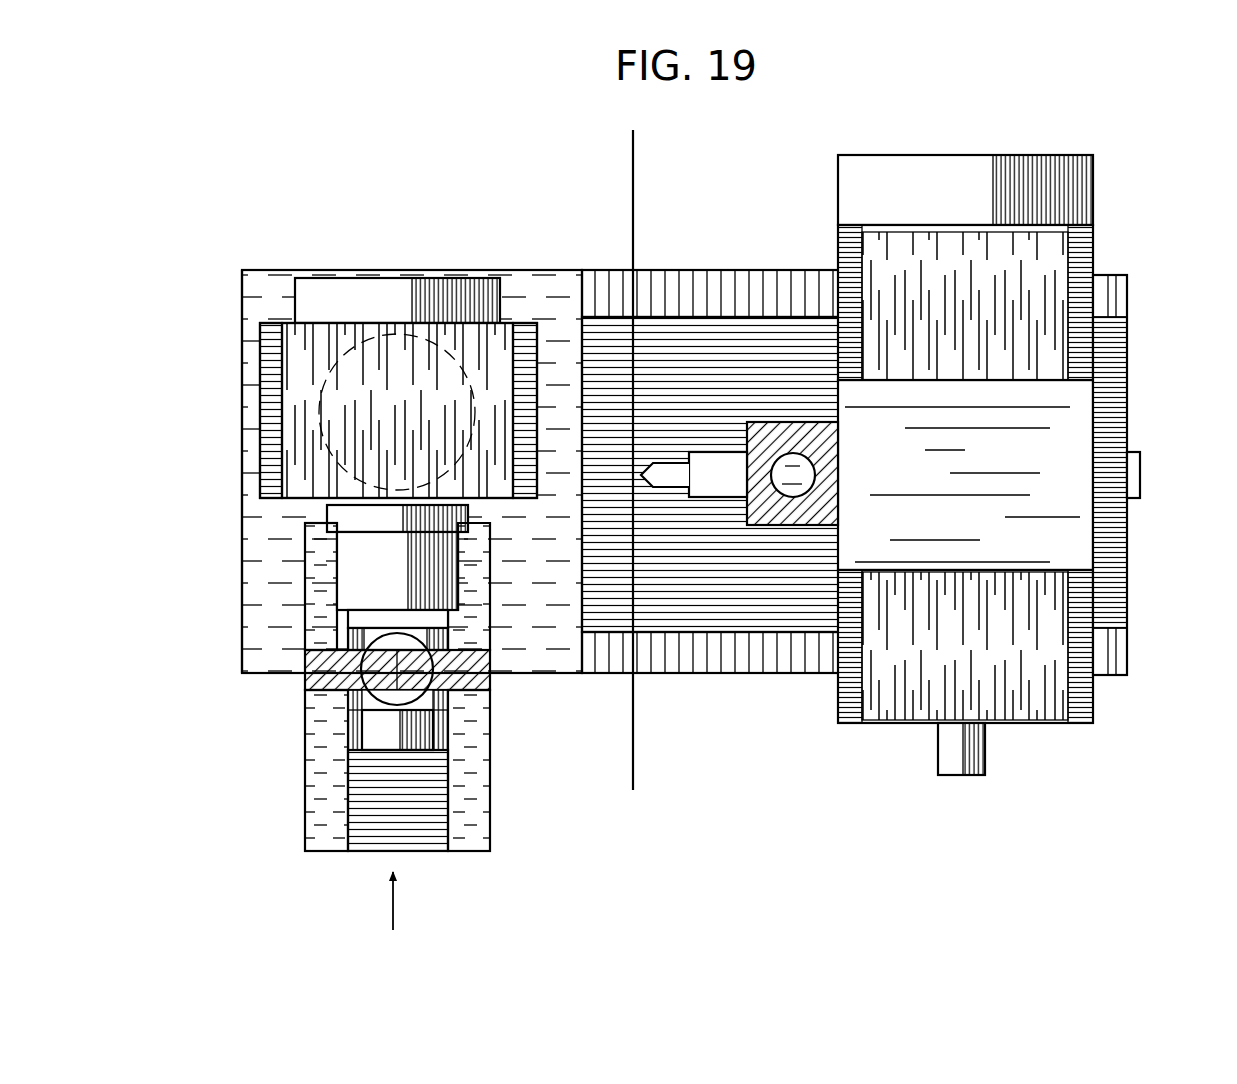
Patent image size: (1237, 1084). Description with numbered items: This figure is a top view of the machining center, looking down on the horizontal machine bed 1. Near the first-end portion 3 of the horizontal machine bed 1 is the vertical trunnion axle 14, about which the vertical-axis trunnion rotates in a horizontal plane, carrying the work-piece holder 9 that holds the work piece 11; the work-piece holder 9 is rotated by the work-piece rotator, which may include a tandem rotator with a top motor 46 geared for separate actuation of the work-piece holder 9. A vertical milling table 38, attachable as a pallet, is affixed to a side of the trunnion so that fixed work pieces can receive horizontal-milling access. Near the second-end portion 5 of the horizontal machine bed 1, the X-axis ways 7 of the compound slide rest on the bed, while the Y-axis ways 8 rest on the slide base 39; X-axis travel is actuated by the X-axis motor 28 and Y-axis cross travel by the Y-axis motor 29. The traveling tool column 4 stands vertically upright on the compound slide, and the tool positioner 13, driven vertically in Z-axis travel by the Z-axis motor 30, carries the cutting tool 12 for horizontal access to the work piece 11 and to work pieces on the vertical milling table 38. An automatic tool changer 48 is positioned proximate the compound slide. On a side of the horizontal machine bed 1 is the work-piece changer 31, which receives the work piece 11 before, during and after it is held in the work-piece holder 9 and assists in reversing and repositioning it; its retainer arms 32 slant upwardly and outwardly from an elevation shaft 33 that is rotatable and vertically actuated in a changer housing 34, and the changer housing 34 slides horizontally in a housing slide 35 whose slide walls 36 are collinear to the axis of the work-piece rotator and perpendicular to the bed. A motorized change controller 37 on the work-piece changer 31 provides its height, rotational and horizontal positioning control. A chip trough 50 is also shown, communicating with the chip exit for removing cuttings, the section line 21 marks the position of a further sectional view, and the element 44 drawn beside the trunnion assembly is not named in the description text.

The horizontal machine bed 1 is at (530, 640).
The first-end portion 3 is at (240, 452).
The traveling tool column 4 is at (810, 437).
The second-end portion 5 is at (1130, 548).
The X-axis ways 7 is at (760, 292).
The Y-axis ways 8 is at (850, 262).
The work-piece holder 9 is at (375, 518).
The work piece 11 is at (375, 572).
The cutting tool 12 is at (700, 498).
The tool positioner 13 is at (718, 474).
The vertical trunnion axle 14 is at (348, 355).
The section line 21 is at (630, 130).
The X-axis motor 28 is at (1142, 475).
The Y-axis motor 29 is at (962, 760).
The Z-axis motor 30 is at (797, 475).
The work-piece changer 31 is at (392, 916).
The retainer arms 32 is at (378, 657).
The elevation shaft 33 is at (395, 705).
The changer housing 34 is at (345, 705).
The housing slide 35 is at (375, 806).
The slide walls 36 is at (322, 808).
The motorized change controller 37 is at (375, 740).
The vertical milling table 38 is at (266, 360).
The slide base 39 is at (930, 645).
The bobbin flange 44 is at (523, 365).
The top motor 46 is at (405, 300).
The automatic tool changer 48 is at (1043, 190).
The chip trough 50 is at (712, 405).